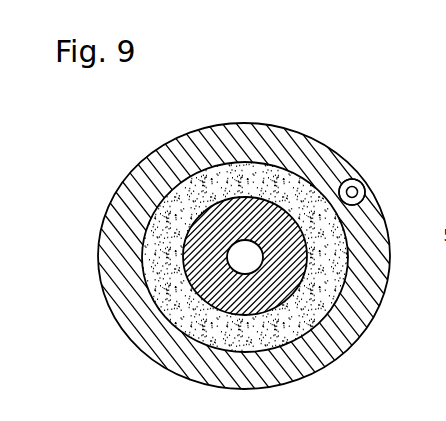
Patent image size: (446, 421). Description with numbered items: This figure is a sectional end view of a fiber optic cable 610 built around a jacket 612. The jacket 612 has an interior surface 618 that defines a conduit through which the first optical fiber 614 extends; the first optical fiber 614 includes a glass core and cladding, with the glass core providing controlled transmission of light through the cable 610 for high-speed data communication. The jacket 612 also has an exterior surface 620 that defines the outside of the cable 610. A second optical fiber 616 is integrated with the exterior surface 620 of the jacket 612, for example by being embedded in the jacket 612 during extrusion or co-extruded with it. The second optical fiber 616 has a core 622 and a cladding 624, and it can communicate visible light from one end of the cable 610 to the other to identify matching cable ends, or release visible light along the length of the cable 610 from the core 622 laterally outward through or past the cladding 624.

The fiber optic cable 610 is at (118, 141).
The jacket 612 is at (222, 143).
The first optical fiber 614 is at (193, 296).
The second optical fiber 616 is at (358, 192).
The interior surface 618 is at (175, 304).
The exterior surface 620 is at (106, 297).
The core 622 is at (355, 186).
The cladding 624 is at (339, 186).